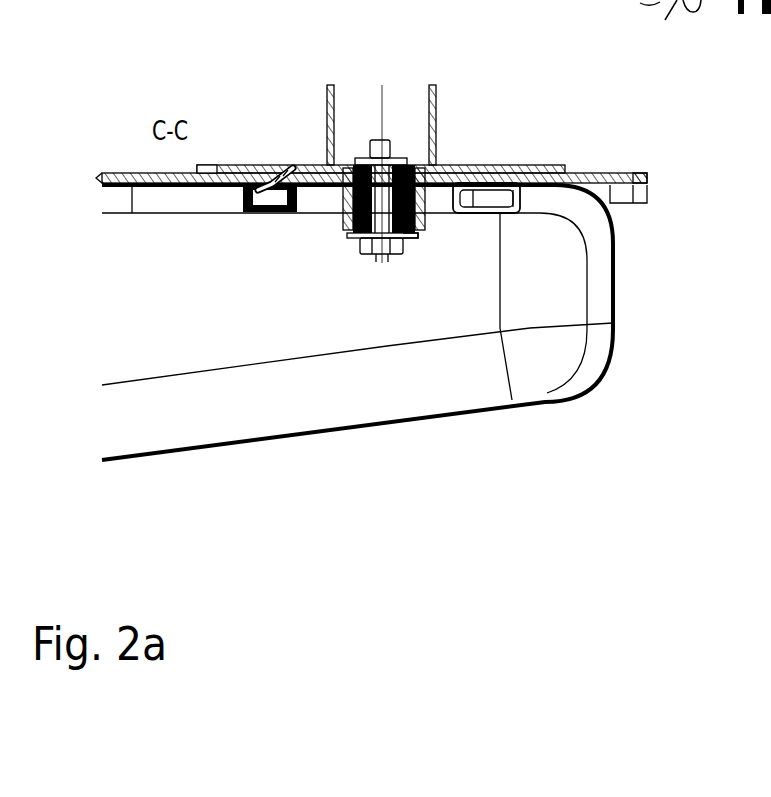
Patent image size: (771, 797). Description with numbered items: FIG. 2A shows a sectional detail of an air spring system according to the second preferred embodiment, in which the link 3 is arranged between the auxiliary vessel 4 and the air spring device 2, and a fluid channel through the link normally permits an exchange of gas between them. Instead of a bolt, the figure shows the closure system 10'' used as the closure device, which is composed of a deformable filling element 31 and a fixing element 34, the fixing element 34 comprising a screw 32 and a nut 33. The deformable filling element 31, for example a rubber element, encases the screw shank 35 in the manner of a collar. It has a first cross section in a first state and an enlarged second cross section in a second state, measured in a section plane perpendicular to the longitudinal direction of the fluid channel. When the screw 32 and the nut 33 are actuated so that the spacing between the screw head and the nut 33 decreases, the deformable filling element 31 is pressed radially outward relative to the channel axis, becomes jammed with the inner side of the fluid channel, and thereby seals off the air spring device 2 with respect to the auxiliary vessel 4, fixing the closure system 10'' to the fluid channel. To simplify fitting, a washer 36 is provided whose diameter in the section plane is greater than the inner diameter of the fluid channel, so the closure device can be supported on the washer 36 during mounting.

The air spring device 2 is at (490, 163).
The link 3 is at (637, 173).
The auxiliary vessel 4 is at (602, 277).
The closure system 10'' is at (415, 191).
The deformable filling element 31 is at (355, 237).
The screw 32 is at (390, 250).
The nut 33 is at (393, 162).
The fixing element 34 is at (367, 257).
The screw shank 35 is at (436, 165).
The washer 36 is at (405, 237).